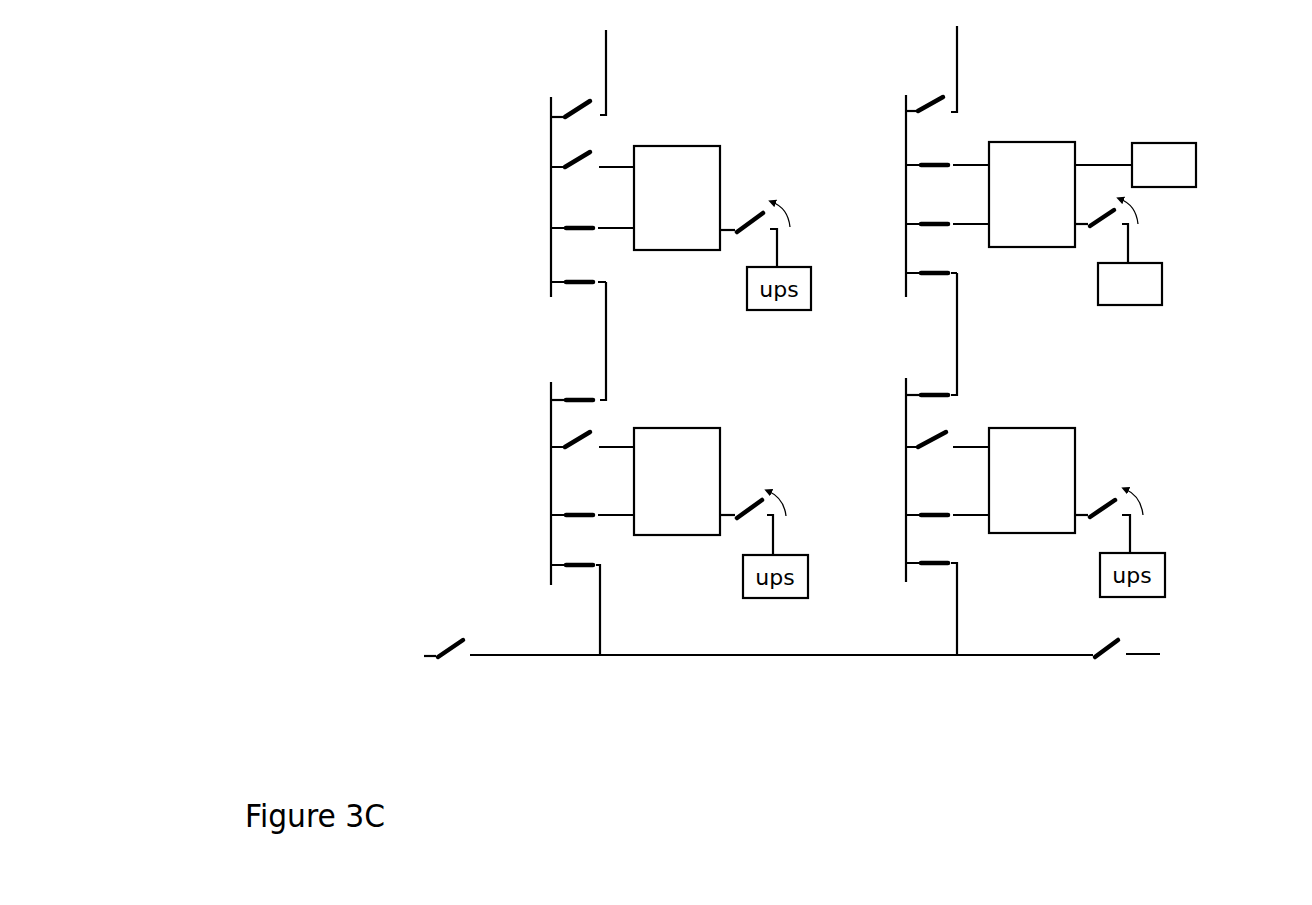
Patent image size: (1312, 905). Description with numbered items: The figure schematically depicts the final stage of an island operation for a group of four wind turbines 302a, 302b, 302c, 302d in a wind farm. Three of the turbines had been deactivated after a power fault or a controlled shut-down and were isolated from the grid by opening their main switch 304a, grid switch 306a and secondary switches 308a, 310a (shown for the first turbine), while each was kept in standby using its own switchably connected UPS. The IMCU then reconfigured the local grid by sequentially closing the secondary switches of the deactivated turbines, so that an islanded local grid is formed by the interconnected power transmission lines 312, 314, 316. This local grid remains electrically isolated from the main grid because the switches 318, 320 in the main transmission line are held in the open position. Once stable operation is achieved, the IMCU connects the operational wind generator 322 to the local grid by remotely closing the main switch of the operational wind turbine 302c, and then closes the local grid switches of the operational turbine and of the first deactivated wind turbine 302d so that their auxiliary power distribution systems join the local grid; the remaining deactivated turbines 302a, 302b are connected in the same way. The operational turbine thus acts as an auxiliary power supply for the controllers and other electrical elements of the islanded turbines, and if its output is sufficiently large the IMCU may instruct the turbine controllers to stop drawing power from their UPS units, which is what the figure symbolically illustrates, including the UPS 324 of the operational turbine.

The wind turbine 302a is at (677, 198).
The wind turbine 302b is at (677, 481).
The operational wind turbine 302c is at (1032, 194).
The first deactivated wind turbine 302d is at (1032, 480).
The main switch 304a is at (567, 150).
The grid switch 306a is at (577, 237).
The secondary switch 308a is at (578, 92).
The secondary switch 310a is at (572, 290).
The power transmission line 312 is at (610, 341).
The power transmission line 314 is at (781, 674).
The power transmission line 316 is at (965, 334).
The switch in the main transmission line 318 is at (451, 668).
The switch in the main transmission line 320 is at (1120, 667).
The operational wind generator 322 is at (1167, 165).
The uninterruptible power supply 324 is at (1166, 264).